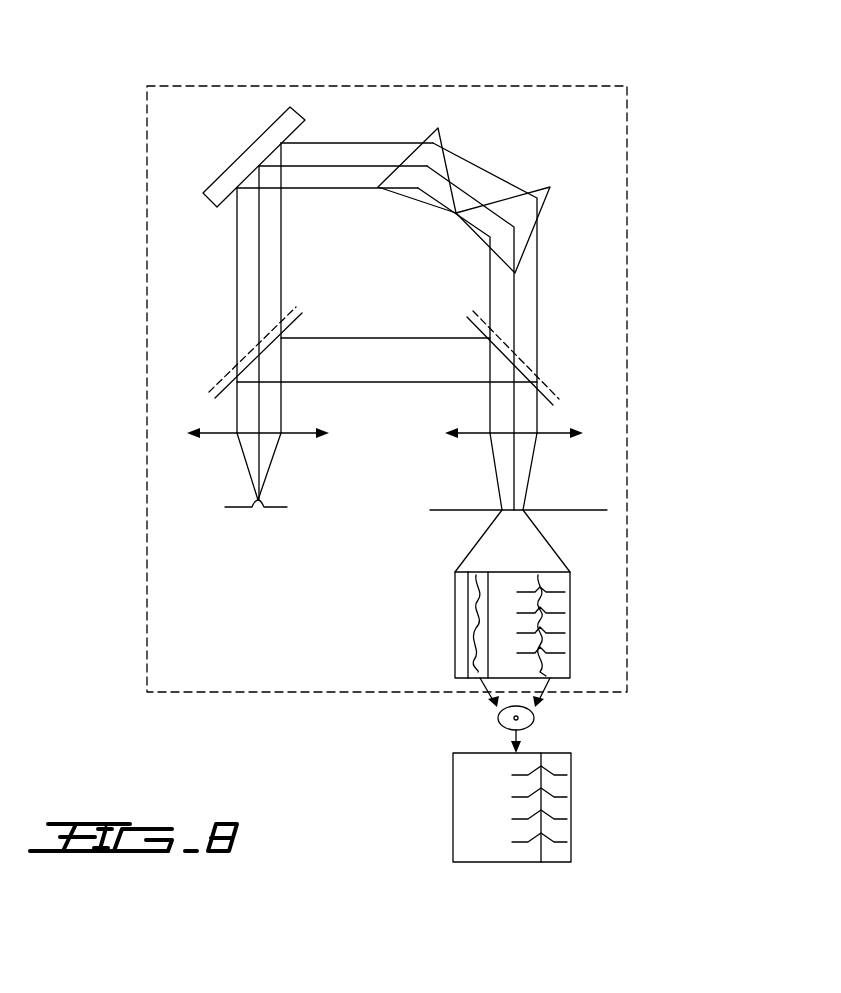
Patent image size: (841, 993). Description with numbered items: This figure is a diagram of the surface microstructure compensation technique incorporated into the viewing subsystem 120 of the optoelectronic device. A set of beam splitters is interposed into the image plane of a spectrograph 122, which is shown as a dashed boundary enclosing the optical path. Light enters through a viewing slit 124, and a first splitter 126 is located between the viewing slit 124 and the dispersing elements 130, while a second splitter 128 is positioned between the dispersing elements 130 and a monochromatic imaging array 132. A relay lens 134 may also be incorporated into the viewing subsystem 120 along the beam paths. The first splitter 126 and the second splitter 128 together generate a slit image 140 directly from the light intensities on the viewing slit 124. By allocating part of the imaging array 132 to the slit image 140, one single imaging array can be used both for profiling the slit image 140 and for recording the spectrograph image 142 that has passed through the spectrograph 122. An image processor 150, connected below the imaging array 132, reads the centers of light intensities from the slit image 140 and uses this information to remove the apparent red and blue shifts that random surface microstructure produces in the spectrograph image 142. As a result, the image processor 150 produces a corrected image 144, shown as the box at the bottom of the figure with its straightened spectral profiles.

The viewing subsystem 120 is at (601, 66).
The spectrograph 122 is at (627, 292).
The viewing slit 124 is at (233, 507).
The first splitter 126 is at (213, 393).
The second splitter 128 is at (556, 403).
The dispersing elements 130 is at (416, 100).
The monochromatic imaging array 132 is at (607, 560).
The relay lens 134 is at (443, 433).
The slit image 140 is at (463, 625).
The spectrograph image 142 is at (570, 633).
The corrected image 144 is at (470, 790).
The image processor 150 is at (535, 718).